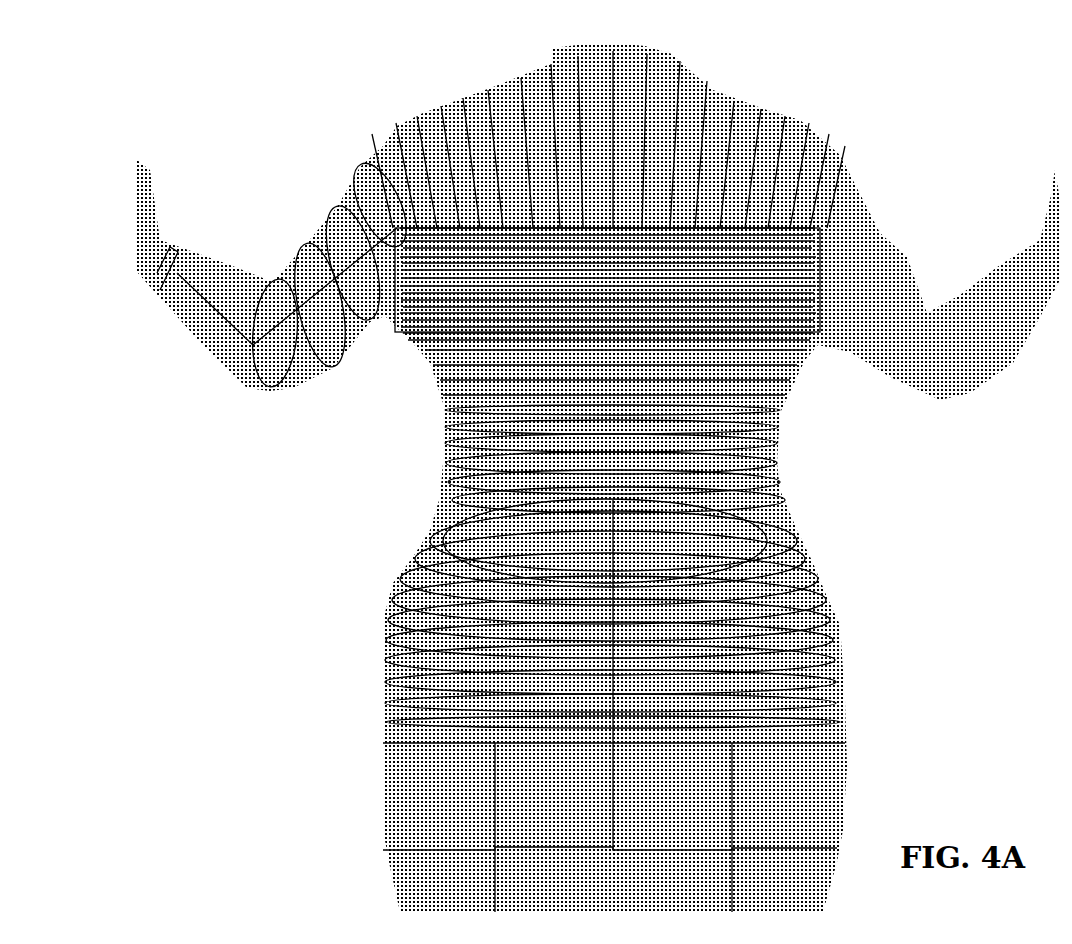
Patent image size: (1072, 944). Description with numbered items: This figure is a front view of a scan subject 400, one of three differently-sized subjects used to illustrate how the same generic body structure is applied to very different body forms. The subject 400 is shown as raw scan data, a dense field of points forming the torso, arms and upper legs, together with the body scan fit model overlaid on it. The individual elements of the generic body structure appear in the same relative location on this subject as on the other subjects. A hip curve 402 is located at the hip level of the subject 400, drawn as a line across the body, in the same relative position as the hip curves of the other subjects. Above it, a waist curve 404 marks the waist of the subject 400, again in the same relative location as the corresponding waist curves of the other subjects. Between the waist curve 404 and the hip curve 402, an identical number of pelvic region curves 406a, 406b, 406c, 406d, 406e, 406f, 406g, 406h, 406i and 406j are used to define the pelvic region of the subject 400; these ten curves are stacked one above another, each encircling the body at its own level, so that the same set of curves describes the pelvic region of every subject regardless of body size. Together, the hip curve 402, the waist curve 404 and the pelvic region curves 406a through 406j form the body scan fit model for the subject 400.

The scan subject 400 is at (250, 150).
The hip curve 402 is at (853, 743).
The waist curve 404 is at (767, 530).
The pelvic region curve 406a is at (633, 722).
The pelvic region curve 406b is at (630, 702).
The pelvic region curve 406c is at (630, 682).
The pelvic region curve 406d is at (629, 660).
The pelvic region curve 406e is at (629, 640).
The pelvic region curve 406f is at (628, 620).
The pelvic region curve 406g is at (630, 600).
The pelvic region curve 406h is at (630, 579).
The pelvic region curve 406i is at (629, 559).
The pelvic region curve 406j is at (631, 541).